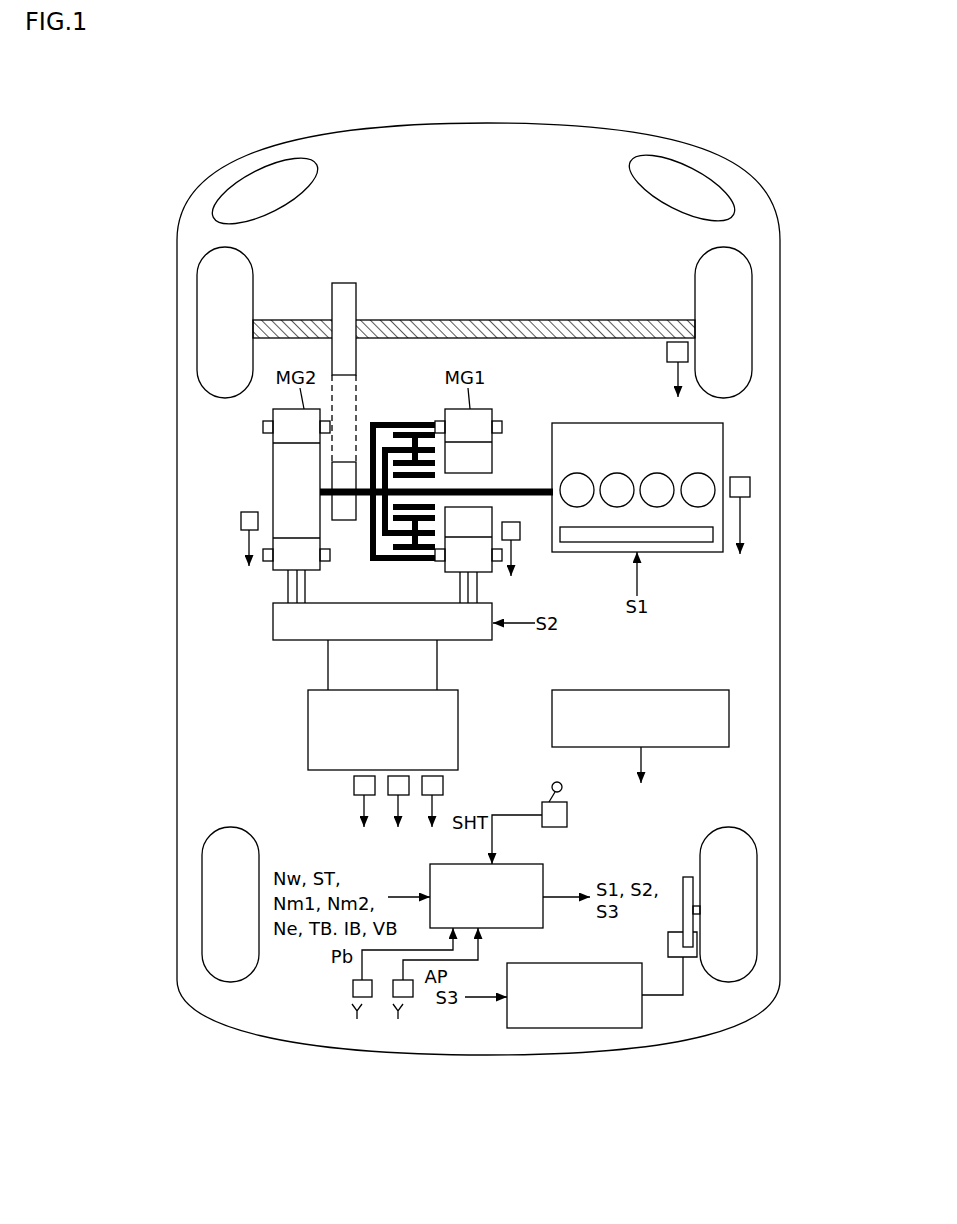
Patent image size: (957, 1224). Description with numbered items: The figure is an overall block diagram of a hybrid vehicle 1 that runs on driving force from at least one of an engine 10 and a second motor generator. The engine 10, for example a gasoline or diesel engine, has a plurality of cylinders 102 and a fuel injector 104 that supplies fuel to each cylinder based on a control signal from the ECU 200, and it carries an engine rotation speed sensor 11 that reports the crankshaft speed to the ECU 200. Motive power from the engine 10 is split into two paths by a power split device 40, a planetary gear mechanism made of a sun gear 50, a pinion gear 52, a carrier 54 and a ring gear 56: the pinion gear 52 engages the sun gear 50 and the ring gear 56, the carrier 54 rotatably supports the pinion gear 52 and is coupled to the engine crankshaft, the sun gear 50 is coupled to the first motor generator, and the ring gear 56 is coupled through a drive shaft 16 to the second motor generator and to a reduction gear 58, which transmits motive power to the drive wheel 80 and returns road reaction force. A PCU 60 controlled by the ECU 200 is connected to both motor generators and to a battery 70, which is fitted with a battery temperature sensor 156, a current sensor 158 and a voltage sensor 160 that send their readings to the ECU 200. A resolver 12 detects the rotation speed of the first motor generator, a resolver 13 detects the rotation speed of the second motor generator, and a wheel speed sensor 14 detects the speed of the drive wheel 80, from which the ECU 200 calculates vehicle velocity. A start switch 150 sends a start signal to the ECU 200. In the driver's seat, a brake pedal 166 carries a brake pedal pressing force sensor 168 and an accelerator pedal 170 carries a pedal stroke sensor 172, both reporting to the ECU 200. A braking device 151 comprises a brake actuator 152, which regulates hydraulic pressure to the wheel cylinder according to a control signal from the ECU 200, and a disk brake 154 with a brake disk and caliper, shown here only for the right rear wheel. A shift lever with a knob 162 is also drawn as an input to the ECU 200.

The vehicle 1 is at (452, 96).
The engine 10 is at (632, 605).
The engine rotation speed sensor 11 is at (740, 477).
The resolver 12 is at (512, 522).
The resolver 13 is at (251, 512).
The wheel speed sensor 14 is at (667, 352).
The drive shaft 16 is at (366, 498).
The power split device 40 is at (454, 476).
The sun gear 50 is at (438, 484).
The pinion gear 52 is at (432, 550).
The carrier 54 is at (396, 540).
The ring gear 56 is at (394, 423).
The reduction gear 58 is at (343, 283).
The PCU 60 is at (273, 625).
The battery 70 is at (308, 735).
The drive wheel 80 is at (706, 258).
The cylinders 102 is at (618, 472).
The fuel injector 104 is at (678, 542).
The start switch 150 is at (683, 690).
The braking device 151 is at (672, 893).
The brake actuator 152 is at (600, 963).
The disk brake 154 is at (692, 968).
The battery temperature sensor 156 is at (354, 786).
The current sensor 158 is at (400, 776).
The voltage sensor 160 is at (443, 786).
The shift lever knob 162 is at (562, 789).
The brake pedal 166 is at (360, 1019).
The brake pedal pressing force sensor 168 is at (350, 995).
The accelerator pedal 170 is at (400, 1019).
The pedal stroke sensor 172 is at (415, 995).
The ECU 200 is at (540, 864).